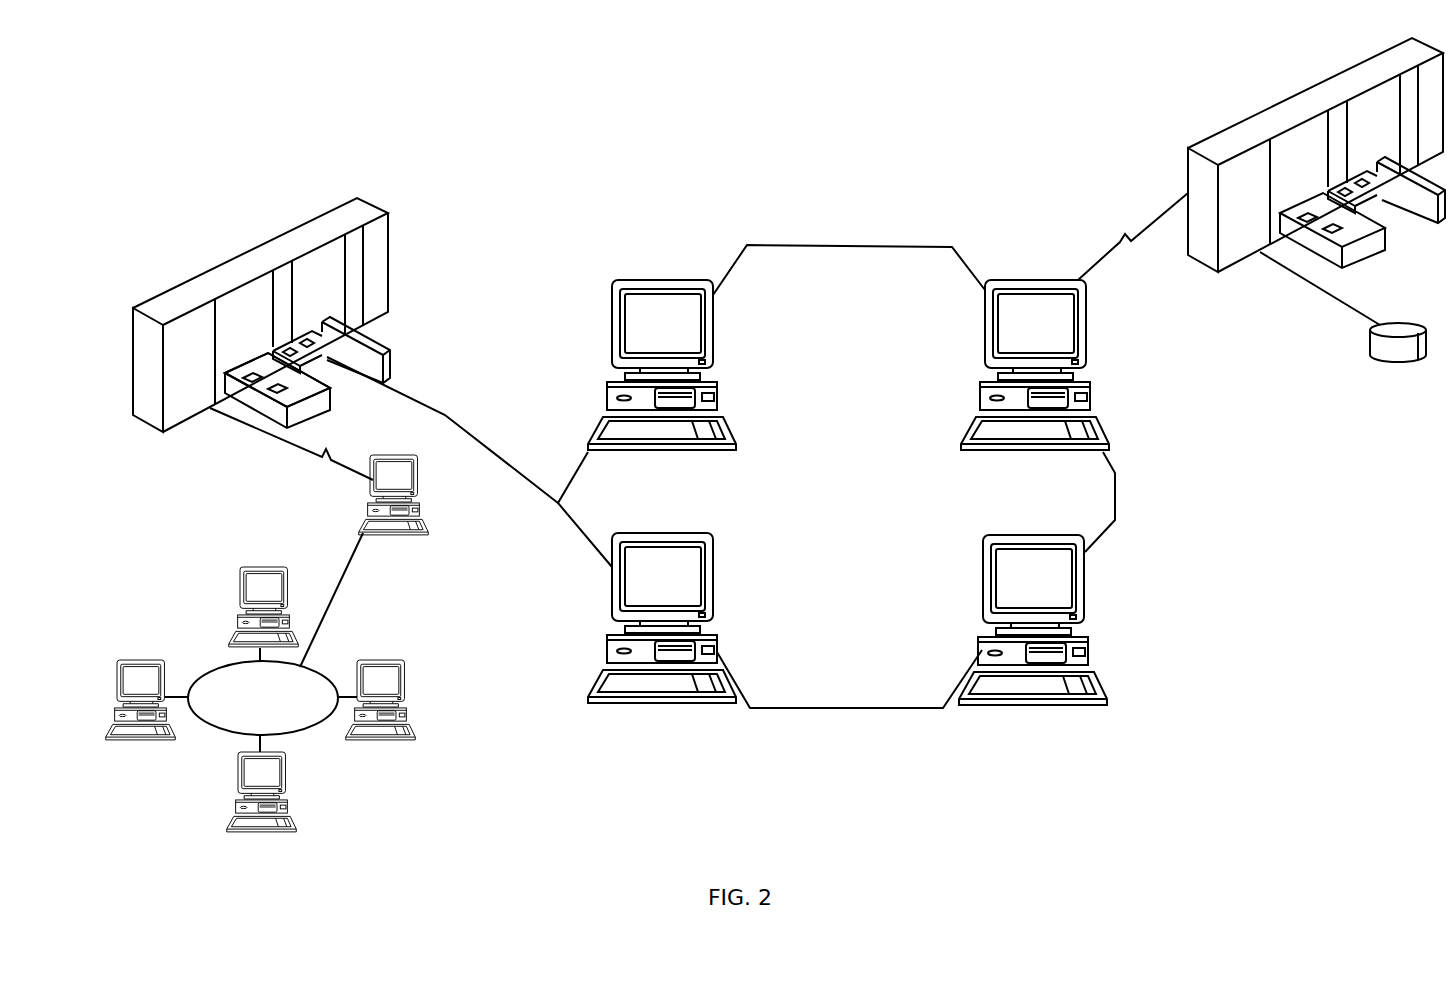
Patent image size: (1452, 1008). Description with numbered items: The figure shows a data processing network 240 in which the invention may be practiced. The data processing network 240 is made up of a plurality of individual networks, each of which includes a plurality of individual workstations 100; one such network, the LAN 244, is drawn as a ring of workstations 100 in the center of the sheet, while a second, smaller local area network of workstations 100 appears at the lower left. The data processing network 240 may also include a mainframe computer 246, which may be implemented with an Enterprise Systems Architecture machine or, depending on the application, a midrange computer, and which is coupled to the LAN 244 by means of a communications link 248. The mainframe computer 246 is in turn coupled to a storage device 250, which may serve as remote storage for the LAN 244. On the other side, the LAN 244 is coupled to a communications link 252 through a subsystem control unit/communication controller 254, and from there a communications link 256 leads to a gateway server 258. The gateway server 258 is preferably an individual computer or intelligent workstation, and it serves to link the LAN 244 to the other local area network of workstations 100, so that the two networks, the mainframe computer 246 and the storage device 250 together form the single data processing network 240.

The workstation 100 is at (663, 280).
The data processing network 240 is at (895, 230).
The LAN 244 is at (836, 476).
The mainframe computer 246 is at (1263, 108).
The communications link 248 is at (1160, 214).
The storage device 250 is at (1405, 330).
The communications link 252 is at (430, 410).
The subsystem control unit/communication controller 254 is at (255, 248).
The communications link 256 is at (273, 437).
The gateway server 258 is at (430, 478).